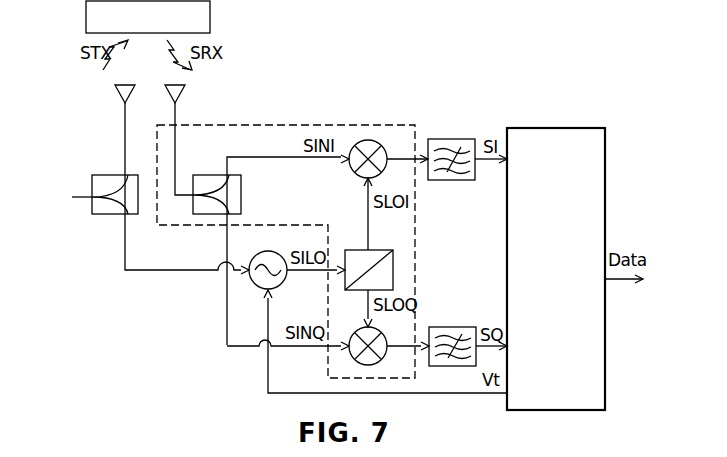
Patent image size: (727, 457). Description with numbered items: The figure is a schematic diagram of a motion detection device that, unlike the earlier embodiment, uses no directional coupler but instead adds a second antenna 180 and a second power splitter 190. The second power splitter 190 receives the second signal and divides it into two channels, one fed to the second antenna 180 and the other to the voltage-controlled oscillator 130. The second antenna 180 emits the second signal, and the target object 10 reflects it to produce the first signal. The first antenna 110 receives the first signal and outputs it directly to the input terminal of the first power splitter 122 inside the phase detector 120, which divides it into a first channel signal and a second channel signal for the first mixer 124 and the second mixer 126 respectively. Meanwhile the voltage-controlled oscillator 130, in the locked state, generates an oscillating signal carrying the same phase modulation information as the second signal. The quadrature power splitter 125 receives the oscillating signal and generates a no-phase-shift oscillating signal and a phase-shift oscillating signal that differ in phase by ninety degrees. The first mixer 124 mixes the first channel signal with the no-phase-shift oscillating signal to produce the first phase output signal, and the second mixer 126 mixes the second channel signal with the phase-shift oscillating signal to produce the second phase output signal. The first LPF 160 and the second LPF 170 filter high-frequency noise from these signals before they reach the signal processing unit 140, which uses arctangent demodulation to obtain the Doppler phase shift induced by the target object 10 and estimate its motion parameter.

The target object 10 is at (211, 17).
The first antenna 110 is at (186, 91).
The phase detector 120 is at (345, 125).
The first power splitter 122 is at (243, 193).
The first mixer 124 is at (388, 148).
The quadrature power splitter 125 is at (355, 250).
The second mixer 126 is at (357, 329).
The voltage-controlled oscillator 130 is at (281, 283).
The signal processing unit 140 is at (550, 128).
The first LPF 160 is at (462, 139).
The second LPF 170 is at (463, 327).
The second antenna 180 is at (113, 90).
The second power splitter 190 is at (100, 175).